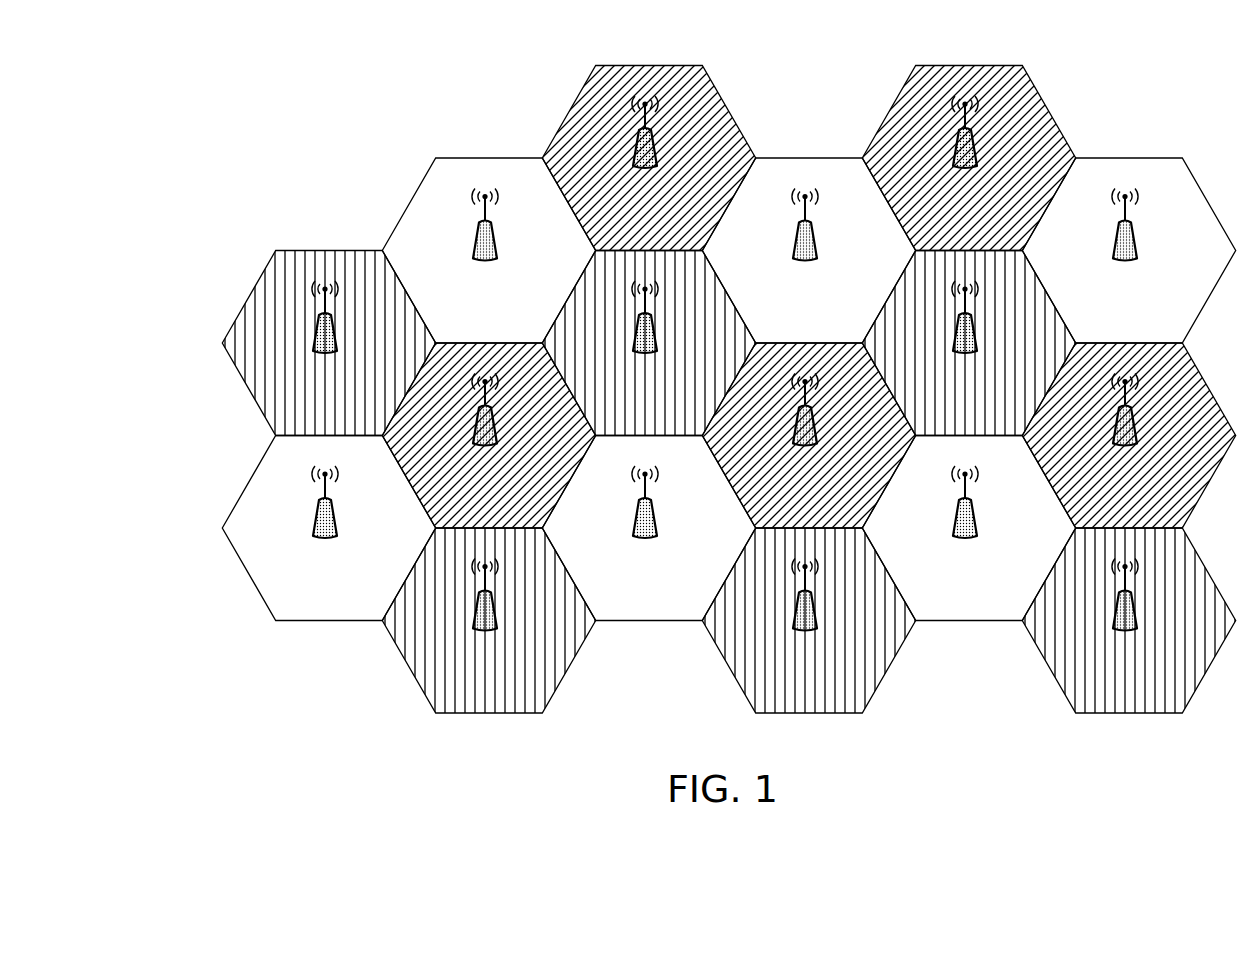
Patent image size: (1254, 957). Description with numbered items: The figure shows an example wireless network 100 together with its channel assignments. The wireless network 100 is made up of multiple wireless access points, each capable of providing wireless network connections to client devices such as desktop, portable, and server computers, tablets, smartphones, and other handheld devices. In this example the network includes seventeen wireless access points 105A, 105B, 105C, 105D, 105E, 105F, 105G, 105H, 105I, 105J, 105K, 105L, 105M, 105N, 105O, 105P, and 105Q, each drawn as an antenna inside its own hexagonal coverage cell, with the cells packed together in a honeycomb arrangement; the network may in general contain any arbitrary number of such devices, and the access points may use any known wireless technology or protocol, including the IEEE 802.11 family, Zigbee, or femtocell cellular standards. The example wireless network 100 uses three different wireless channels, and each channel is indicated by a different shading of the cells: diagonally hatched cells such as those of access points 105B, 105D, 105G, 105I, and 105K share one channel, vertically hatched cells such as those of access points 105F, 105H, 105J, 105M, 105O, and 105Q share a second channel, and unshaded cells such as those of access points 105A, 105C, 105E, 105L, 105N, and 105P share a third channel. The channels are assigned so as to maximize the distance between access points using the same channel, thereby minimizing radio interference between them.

The wireless network 100 is at (704, 364).
The wireless access point 105A is at (488, 250).
The wireless access point 105B is at (648, 158).
The wireless access point 105C is at (808, 250).
The wireless access point 105D is at (968, 158).
The wireless access point 105E is at (1128, 250).
The wireless access point 105F is at (328, 343).
The wireless access point 105G is at (488, 435).
The wireless access point 105H is at (648, 343).
The wireless access point 105I is at (808, 435).
The wireless access point 105J is at (968, 343).
The wireless access point 105K is at (1128, 435).
The wireless access point 105L is at (328, 528).
The wireless access point 105M is at (488, 620).
The wireless access point 105N is at (648, 528).
The wireless access point 105O is at (808, 620).
The wireless access point 105P is at (968, 528).
The wireless access point 105Q is at (1128, 620).